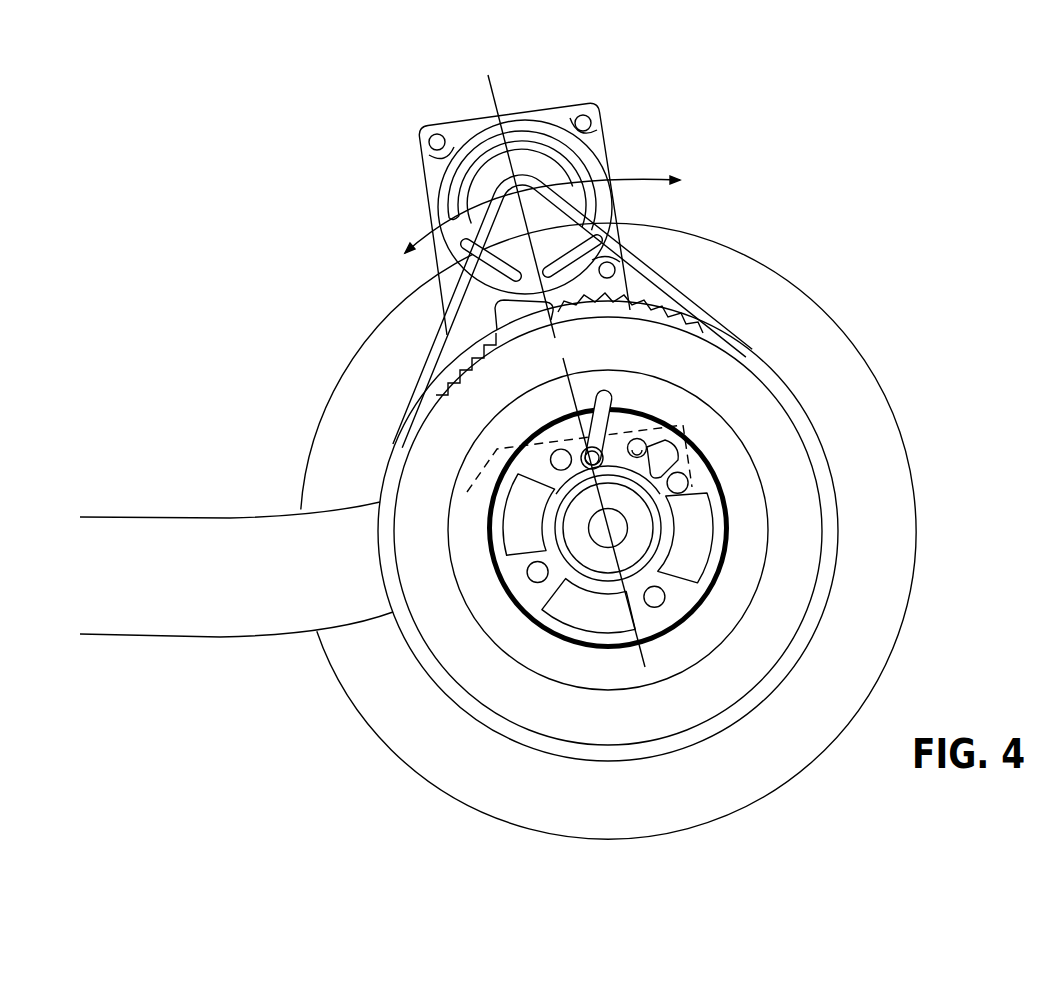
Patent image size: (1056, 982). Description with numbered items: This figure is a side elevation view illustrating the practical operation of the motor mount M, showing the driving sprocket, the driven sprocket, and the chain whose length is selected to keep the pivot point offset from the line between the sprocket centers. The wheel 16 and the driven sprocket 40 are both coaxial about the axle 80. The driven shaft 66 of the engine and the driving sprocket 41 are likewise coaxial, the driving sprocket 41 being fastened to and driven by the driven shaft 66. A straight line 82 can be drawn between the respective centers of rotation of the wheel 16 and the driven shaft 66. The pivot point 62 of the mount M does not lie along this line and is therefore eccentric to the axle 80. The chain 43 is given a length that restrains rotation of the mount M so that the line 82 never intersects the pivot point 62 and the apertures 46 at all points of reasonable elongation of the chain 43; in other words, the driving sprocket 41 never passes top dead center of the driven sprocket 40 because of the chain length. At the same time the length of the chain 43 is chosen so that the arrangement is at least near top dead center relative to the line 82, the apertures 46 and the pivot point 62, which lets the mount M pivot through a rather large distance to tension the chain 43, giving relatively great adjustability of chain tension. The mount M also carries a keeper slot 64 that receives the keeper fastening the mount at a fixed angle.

The wheel 16 is at (913, 477).
The driven sprocket 40 is at (672, 715).
The driving sprocket 41 is at (460, 228).
The chain 43 is at (403, 375).
The apertures 46 is at (672, 447).
The pivot point 62 is at (629, 450).
The keeper slot 64 is at (578, 455).
The driven shaft 66 is at (527, 207).
The axle 80 is at (620, 528).
The straight line 82 is at (690, 612).
The motor mount M is at (606, 103).